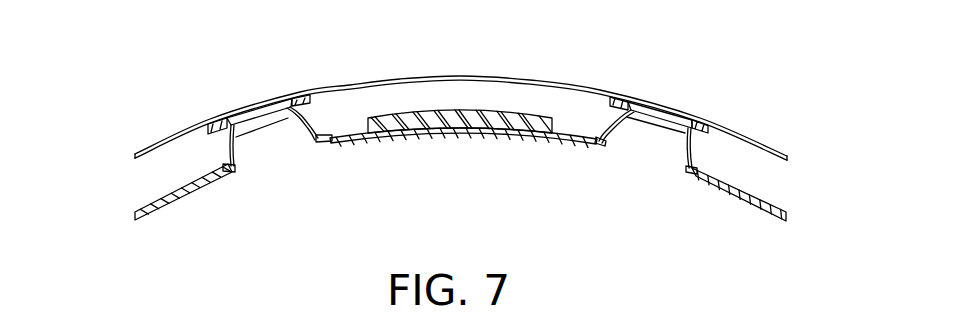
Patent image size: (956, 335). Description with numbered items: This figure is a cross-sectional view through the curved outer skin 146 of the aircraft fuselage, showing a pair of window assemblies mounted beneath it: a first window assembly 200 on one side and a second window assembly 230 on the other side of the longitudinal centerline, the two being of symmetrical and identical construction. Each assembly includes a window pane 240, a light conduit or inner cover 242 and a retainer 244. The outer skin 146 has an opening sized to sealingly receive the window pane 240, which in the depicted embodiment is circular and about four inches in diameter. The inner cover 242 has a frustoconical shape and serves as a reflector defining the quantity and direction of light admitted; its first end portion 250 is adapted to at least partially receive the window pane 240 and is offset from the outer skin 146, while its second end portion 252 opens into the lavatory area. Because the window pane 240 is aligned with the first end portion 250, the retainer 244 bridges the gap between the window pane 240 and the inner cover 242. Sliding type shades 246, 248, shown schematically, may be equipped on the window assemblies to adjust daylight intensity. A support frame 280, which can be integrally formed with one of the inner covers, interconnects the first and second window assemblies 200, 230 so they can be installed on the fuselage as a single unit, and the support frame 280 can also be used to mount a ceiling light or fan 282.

The outer skin 146 is at (463, 76).
The first window assembly 200 is at (652, 150).
The second window assembly 230 is at (255, 186).
The window pane 240 is at (655, 100).
The inner cover 242 is at (608, 98).
The retainer 244 is at (700, 122).
The sliding type shade 246 is at (760, 210).
The sliding type shade 248 is at (165, 207).
The first end portion 250 is at (693, 142).
The second end portion 252 is at (598, 144).
The support frame 280 is at (355, 139).
The ceiling light or fan 282 is at (467, 119).